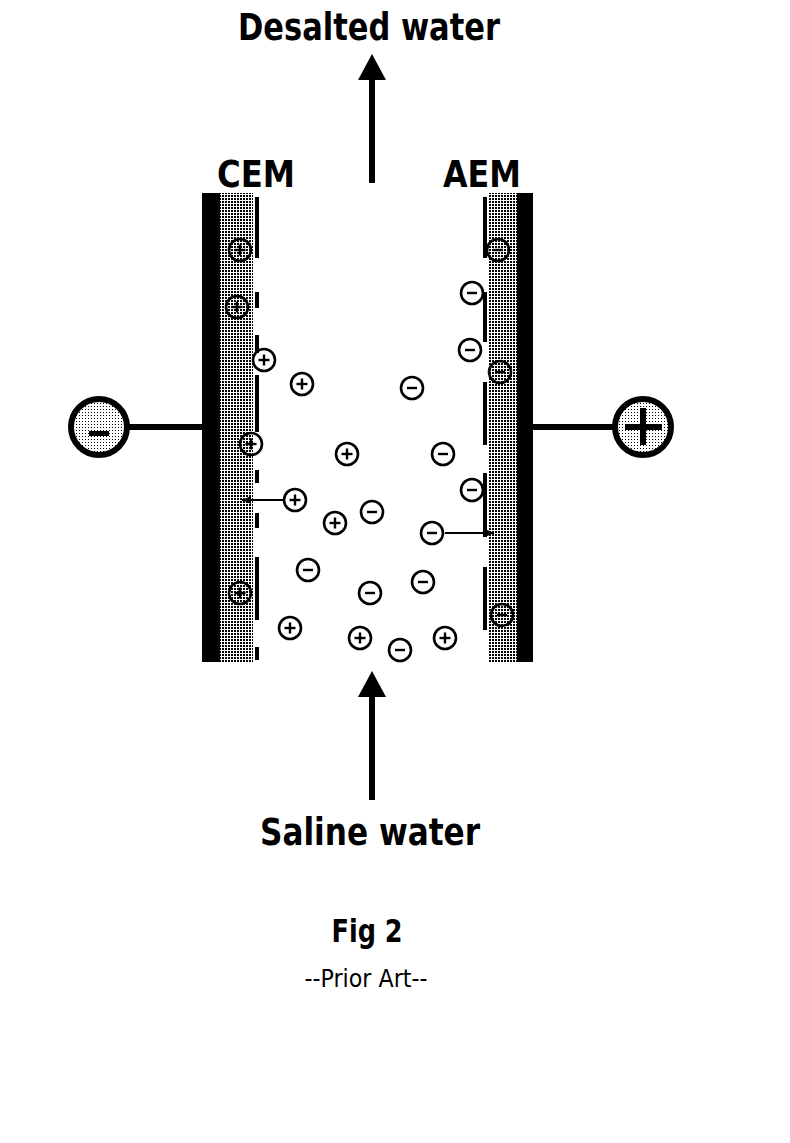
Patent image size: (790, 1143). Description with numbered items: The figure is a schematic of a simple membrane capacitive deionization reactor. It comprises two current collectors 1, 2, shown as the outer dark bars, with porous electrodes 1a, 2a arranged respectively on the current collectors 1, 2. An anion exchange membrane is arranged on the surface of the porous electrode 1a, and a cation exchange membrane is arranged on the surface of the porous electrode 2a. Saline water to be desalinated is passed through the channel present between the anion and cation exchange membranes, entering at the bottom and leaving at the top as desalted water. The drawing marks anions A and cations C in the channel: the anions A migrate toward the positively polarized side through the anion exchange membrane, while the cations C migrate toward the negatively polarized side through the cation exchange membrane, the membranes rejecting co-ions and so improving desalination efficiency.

The current collector 1 is at (524, 192).
The porous electrode 1a is at (502, 668).
The current collector 2 is at (214, 195).
The porous electrode 2a is at (235, 666).
The anion A is at (460, 291).
The cation C is at (319, 366).